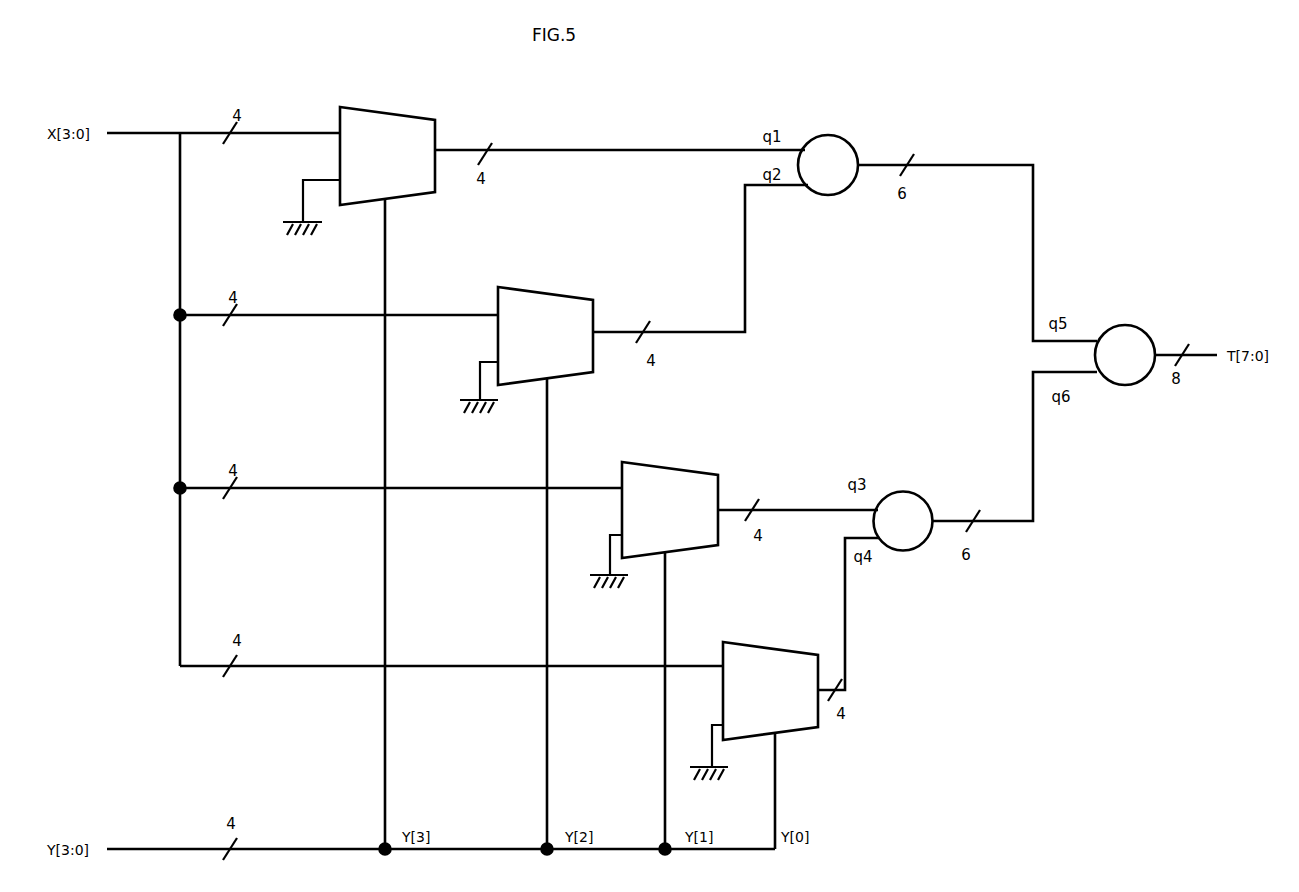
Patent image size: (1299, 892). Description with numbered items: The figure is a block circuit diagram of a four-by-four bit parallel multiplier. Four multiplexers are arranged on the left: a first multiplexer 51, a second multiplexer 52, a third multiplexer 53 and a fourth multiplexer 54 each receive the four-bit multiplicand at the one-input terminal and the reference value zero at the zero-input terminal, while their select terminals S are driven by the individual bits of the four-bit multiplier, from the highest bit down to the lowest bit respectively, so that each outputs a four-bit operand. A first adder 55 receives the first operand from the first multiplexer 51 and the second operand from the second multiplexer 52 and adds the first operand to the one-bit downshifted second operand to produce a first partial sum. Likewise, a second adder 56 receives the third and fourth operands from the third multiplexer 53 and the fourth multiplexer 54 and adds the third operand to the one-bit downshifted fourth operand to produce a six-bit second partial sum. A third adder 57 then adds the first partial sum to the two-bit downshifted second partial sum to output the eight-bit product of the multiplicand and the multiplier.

The first multiplexer 51 is at (394, 116).
The second multiplexer 52 is at (550, 294).
The third multiplexer 53 is at (668, 468).
The fourth multiplexer 54 is at (765, 648).
The first adder 55 is at (836, 138).
The second adder 56 is at (902, 493).
The third adder 57 is at (1125, 326).